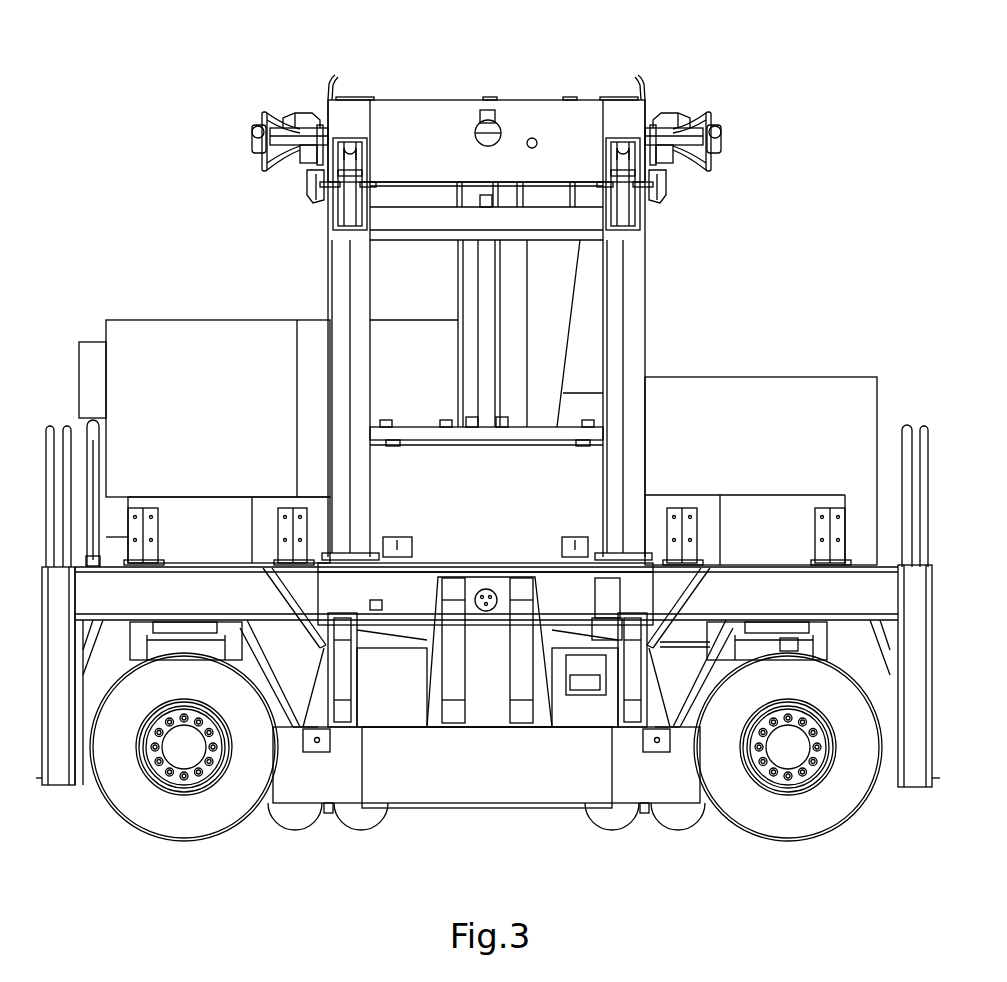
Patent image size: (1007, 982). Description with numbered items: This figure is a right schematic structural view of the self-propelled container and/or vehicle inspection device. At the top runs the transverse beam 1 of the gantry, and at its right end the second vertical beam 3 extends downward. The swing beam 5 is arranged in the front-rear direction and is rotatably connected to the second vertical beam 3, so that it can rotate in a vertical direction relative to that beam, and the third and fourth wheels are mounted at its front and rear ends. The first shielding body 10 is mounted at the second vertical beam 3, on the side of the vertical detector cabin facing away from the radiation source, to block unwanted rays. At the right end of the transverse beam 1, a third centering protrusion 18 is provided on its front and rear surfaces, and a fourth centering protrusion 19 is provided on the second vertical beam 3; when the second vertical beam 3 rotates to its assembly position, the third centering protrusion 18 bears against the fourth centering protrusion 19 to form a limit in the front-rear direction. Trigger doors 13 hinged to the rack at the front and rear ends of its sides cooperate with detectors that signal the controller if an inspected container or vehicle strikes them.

The transverse beam 1 is at (423, 145).
The second vertical beam 3 is at (615, 355).
The swing beam 5 is at (395, 695).
The first shielding body 10 is at (525, 507).
The trigger door 13 is at (67, 452).
The third centering protrusion 18 is at (318, 180).
The fourth centering protrusion 19 is at (325, 200).